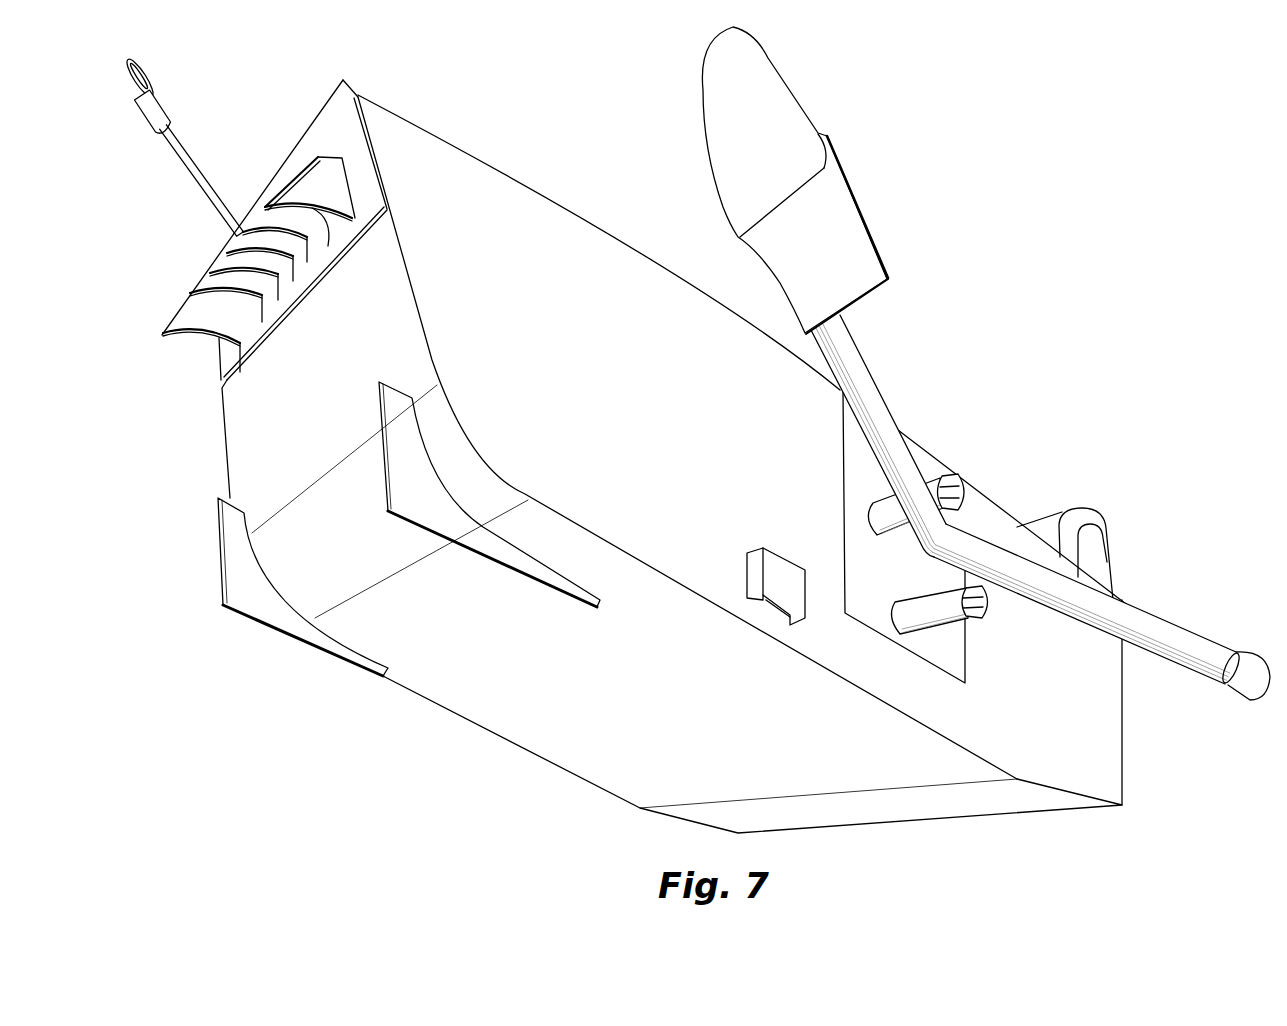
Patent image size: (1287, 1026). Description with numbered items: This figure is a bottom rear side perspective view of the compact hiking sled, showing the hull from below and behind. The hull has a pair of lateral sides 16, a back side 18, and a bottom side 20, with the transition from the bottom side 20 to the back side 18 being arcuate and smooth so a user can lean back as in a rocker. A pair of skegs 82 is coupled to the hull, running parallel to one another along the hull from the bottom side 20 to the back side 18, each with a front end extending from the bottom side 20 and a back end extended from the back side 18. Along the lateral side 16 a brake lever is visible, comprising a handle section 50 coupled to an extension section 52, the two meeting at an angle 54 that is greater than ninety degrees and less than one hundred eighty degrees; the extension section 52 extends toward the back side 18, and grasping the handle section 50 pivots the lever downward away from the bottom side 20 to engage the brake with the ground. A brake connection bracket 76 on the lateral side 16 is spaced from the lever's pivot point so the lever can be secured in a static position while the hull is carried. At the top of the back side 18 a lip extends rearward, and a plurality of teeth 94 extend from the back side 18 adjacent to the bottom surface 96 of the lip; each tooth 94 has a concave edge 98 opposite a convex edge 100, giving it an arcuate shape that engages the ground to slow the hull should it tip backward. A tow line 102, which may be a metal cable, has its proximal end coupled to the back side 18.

The lateral sides 16 is at (630, 503).
The back side 18 is at (258, 420).
The bottom side 20 is at (497, 703).
The handle section 50 is at (1167, 637).
The extension section 52 is at (850, 358).
The angle 54 is at (970, 512).
The brake connection bracket 76 is at (760, 555).
The skegs 82 is at (235, 548).
The teeth 94 is at (337, 187).
The bottom surface 96 is at (207, 273).
The concave edge 98 is at (318, 214).
The convex edge 100 is at (313, 157).
The tow line 102 is at (183, 158).